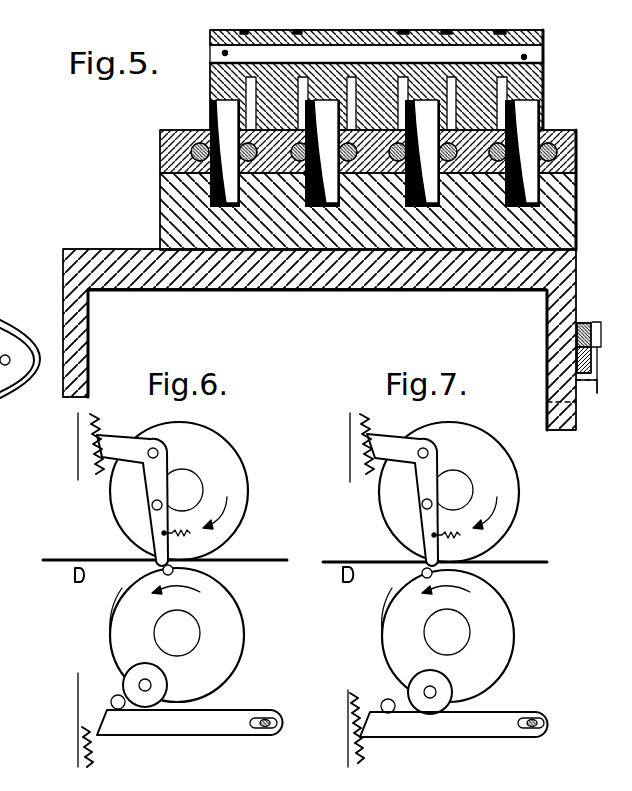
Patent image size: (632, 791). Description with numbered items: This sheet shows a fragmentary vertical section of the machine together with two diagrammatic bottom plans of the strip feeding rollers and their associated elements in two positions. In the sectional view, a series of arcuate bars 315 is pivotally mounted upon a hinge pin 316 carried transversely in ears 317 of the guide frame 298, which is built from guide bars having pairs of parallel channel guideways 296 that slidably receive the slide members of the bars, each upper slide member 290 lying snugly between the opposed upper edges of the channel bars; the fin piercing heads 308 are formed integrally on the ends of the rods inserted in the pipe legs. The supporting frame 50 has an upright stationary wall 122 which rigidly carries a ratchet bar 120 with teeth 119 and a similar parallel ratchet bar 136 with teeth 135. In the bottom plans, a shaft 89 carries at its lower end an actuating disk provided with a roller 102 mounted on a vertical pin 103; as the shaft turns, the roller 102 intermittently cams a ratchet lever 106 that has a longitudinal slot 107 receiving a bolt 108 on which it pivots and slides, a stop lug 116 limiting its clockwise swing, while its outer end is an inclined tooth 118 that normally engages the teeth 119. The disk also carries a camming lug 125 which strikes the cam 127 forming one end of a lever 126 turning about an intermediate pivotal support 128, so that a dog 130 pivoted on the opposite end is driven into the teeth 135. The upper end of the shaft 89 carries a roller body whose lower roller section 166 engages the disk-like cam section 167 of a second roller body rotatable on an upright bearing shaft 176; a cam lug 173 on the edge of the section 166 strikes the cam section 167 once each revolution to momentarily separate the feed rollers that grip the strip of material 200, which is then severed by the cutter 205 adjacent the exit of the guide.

In FIG. 5, the arcuate bar 315 is at (503, 32).
In FIG. 5, the hinge pin 316 is at (228, 49).
In FIG. 5, the ears 317 is at (353, 32).
In FIG. 5, the fin piercing head 308 is at (207, 157).
In FIG. 5, the guide frame 298 is at (160, 148).
In FIG. 5, the channel guideway 296 is at (160, 168).
In FIG. 5, the upper slide member 290 is at (560, 133).
In FIG. 5, the supporting frame 50 is at (130, 249).
In FIG. 5, the ratchet bar 136 is at (578, 332).
In FIG. 5, the ratchet bar 120 is at (578, 357).
In FIG. 5, the teeth 135 is at (594, 322).
In FIG. 6, the teeth 135 is at (92, 467).
In FIG. 7, the teeth 135 is at (339, 444).
In FIG. 5, the upright stationary wall 122 is at (557, 390).
In FIG. 5, the teeth 119 is at (596, 382).
In FIG. 6, the teeth 119 is at (92, 748).
In FIG. 7, the teeth 119 is at (334, 731).
In FIG. 6, the cam section 167 is at (227, 467).
In FIG. 7, the cam section 167 is at (472, 492).
In FIG. 6, the bearing shaft 176 is at (203, 488).
In FIG. 7, the bearing shaft 176 is at (499, 490).
In FIG. 6, the lower roller section 166 is at (247, 602).
In FIG. 7, the lower roller section 166 is at (473, 636).
In FIG. 6, the camming lug 125 is at (122, 588).
In FIG. 7, the camming lug 125 is at (354, 609).
In FIG. 6, the shaft 89 is at (155, 632).
In FIG. 7, the shaft 89 is at (397, 632).
In FIG. 6, the strip of material 200 is at (277, 549).
In FIG. 7, the strip of material 200 is at (443, 542).
In FIG. 6, the lever 126 is at (148, 480).
In FIG. 7, the lever 126 is at (371, 500).
In FIG. 6, the intermediate pivotal support 128 is at (152, 505).
In FIG. 7, the intermediate pivotal support 128 is at (370, 513).
In FIG. 6, the cam 127 is at (157, 557).
In FIG. 7, the cam 127 is at (386, 541).
In FIG. 6, the cam lug 173 is at (220, 572).
In FIG. 7, the cam lug 173 is at (492, 581).
In FIG. 6, the dog 130 is at (117, 445).
In FIG. 7, the dog 130 is at (346, 447).
In FIG. 6, the cutter 205 is at (75, 573).
In FIG. 7, the cutter 205 is at (326, 577).
In FIG. 6, the roller 102 is at (140, 685).
In FIG. 7, the roller 102 is at (383, 689).
In FIG. 6, the vertical pin 103 is at (140, 689).
In FIG. 7, the vertical pin 103 is at (369, 702).
In FIG. 6, the stop lug 116 is at (115, 705).
In FIG. 7, the stop lug 116 is at (349, 721).
In FIG. 6, the ratchet lever 106 is at (163, 727).
In FIG. 7, the ratchet lever 106 is at (454, 742).
In FIG. 6, the slot 107 is at (253, 732).
In FIG. 7, the slot 107 is at (521, 745).
In FIG. 6, the bolt 108 is at (273, 732).
In FIG. 7, the bolt 108 is at (548, 746).
In FIG. 6, the inclined tooth 118 is at (106, 721).
In FIG. 7, the inclined tooth 118 is at (374, 730).